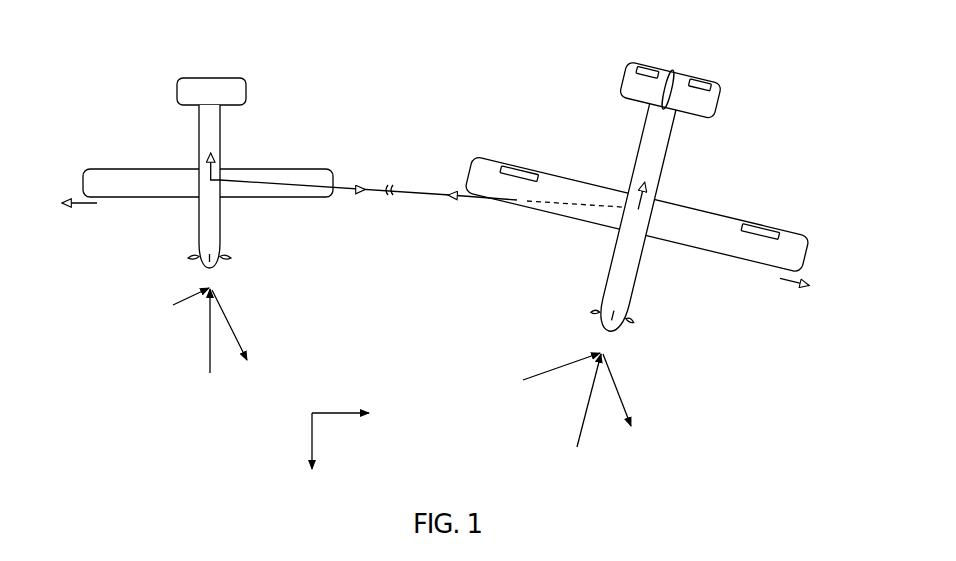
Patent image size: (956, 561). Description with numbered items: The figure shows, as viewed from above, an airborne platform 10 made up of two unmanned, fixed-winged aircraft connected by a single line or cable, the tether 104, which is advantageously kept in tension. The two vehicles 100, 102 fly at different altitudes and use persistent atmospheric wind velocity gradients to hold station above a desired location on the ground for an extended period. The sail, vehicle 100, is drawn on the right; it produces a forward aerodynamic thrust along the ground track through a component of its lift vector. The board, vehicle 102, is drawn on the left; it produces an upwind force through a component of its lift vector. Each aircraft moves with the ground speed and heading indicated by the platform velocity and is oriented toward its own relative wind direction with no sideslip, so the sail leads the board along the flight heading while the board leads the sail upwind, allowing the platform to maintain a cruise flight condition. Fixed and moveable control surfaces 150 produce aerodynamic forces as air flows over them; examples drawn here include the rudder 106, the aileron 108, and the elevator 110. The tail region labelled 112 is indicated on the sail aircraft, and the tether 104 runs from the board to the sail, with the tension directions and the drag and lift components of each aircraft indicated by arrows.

The airborne platform 10 is at (235, 408).
The sail vehicle 100 is at (656, 285).
The board vehicle 102 is at (266, 120).
The tether 104 is at (309, 199).
The rudder 106 is at (667, 88).
The aileron 108 is at (510, 166).
The elevator 110 is at (700, 72).
The tail 112 is at (586, 306).
The control surfaces 150 is at (160, 178).